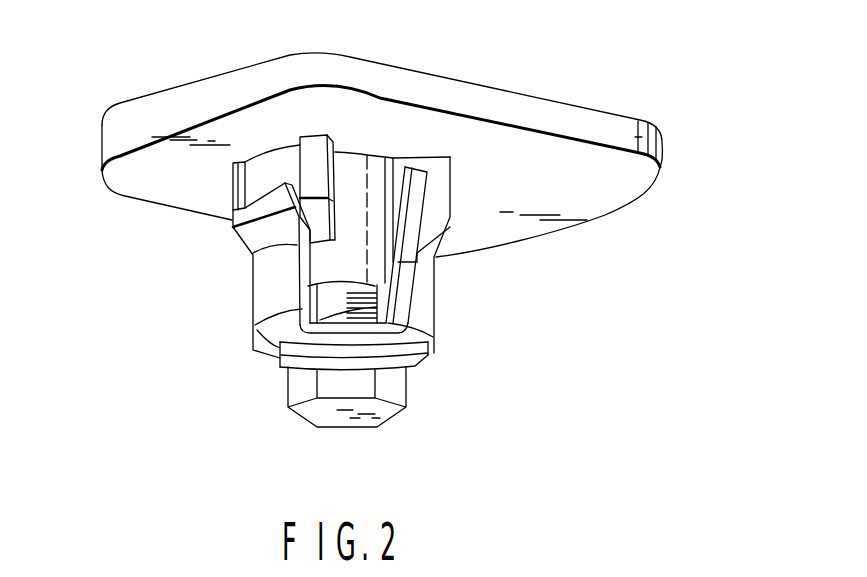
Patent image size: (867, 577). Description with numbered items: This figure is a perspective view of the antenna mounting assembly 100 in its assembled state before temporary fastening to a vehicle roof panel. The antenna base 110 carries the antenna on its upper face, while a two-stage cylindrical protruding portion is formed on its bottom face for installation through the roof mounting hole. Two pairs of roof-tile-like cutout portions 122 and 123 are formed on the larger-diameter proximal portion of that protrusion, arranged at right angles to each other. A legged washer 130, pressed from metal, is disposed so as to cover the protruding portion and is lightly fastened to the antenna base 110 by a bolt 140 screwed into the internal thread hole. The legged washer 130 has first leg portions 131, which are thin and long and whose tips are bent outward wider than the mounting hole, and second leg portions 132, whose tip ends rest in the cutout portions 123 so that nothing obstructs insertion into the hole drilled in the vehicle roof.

The antenna attachment apparatus 100 is at (661, 138).
The antenna base 110 is at (147, 200).
The roof-tile-like cutout portions 122 is at (413, 145).
The roof-tile-like cutout portions 123 is at (283, 165).
The legged washer 130 is at (260, 368).
The first leg portions 131 is at (417, 190).
The second leg portions 132 is at (263, 288).
The bolt 140 is at (317, 417).